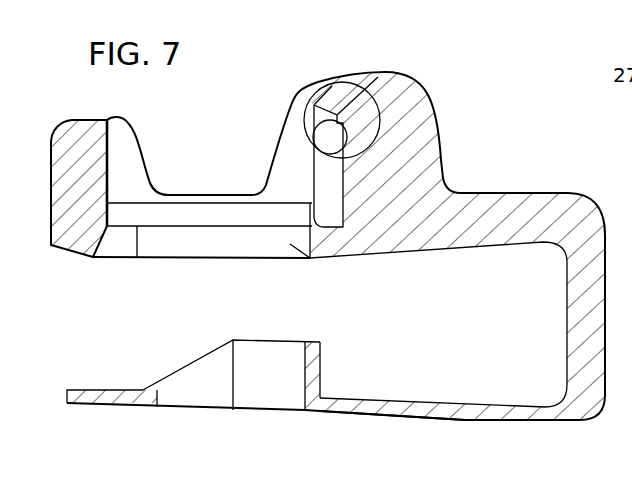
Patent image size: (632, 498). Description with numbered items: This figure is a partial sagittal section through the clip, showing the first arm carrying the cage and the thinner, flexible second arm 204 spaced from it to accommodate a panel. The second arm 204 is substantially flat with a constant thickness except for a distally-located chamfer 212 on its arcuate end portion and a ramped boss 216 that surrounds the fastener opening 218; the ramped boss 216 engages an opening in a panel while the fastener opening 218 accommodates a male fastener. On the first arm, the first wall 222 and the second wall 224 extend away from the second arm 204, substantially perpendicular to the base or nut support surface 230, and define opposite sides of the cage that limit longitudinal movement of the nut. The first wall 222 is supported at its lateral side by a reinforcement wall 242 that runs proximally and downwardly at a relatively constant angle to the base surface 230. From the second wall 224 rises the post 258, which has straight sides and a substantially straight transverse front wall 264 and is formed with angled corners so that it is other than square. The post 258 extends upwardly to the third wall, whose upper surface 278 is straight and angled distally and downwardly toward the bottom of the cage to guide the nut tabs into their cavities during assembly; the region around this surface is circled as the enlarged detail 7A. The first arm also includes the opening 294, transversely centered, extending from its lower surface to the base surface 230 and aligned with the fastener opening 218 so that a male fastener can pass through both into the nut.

The second arm 204 is at (362, 414).
The chamfer 212 is at (67, 390).
The ramped boss 216 is at (320, 367).
The fastener opening 218 is at (195, 390).
The first wall 222 is at (78, 120).
The second wall 224 is at (391, 82).
The base or nut support surface 230 is at (136, 230).
The reinforcement wall 242 is at (126, 127).
The post 258 is at (450, 177).
The front wall 264 is at (313, 177).
The upper surface 278 is at (330, 88).
The opening 294 is at (312, 260).
The enlarged detail 7A is at (426, 89).